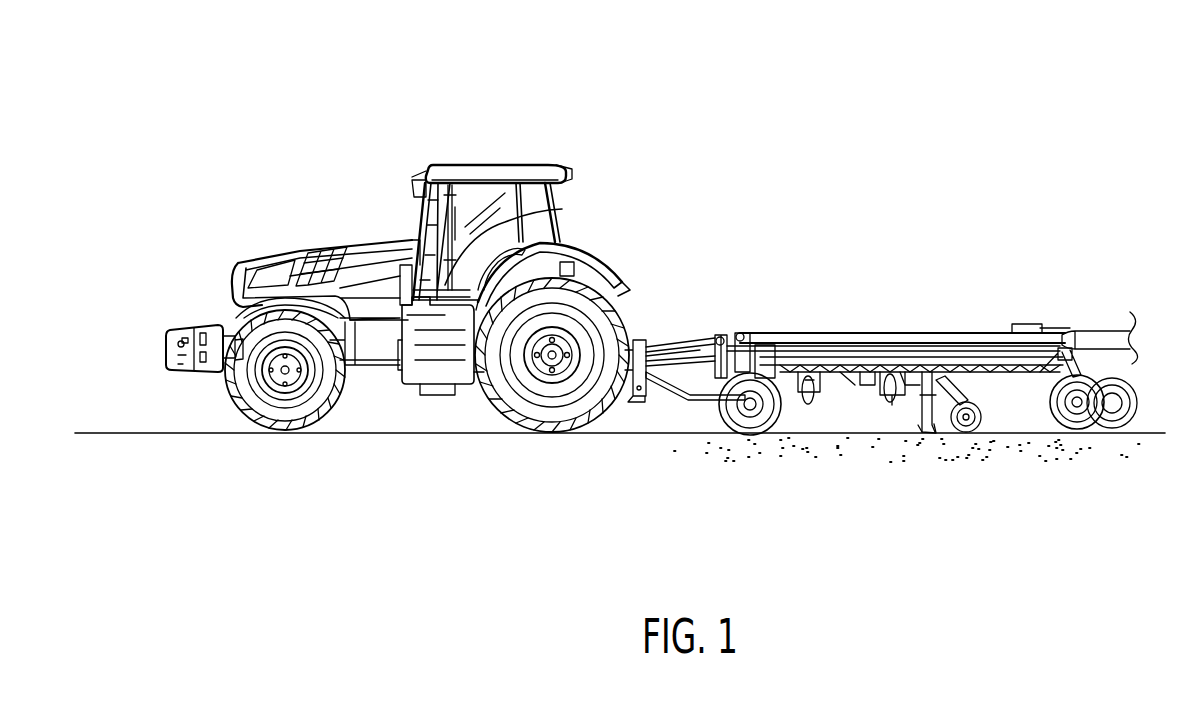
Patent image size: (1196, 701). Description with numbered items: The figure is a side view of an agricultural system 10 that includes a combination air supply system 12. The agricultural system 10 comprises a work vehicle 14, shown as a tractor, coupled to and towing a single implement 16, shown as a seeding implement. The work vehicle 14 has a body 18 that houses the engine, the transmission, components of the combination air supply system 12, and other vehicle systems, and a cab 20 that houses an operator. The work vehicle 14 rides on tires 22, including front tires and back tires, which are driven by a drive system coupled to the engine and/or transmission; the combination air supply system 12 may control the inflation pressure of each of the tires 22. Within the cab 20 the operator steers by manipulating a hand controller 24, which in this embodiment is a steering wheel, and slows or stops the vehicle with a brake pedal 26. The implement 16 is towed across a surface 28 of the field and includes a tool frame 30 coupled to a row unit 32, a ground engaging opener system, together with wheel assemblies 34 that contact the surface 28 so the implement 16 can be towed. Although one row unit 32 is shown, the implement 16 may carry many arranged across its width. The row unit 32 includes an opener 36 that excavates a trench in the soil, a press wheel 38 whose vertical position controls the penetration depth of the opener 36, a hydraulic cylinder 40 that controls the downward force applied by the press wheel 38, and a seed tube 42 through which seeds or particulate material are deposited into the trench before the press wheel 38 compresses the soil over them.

The agricultural system 10 is at (853, 91).
The combination air supply system 12 is at (677, 295).
The work vehicle 14 is at (488, 146).
The implement 16 is at (889, 294).
The body 18 is at (322, 247).
The cab 20 is at (502, 176).
The tires 22 is at (284, 435).
The hand controller 24 is at (468, 205).
The brake pedal 26 is at (560, 210).
The surface 28 is at (634, 441).
The tool frame 30 is at (915, 345).
The row unit 32 is at (912, 418).
The wheel assemblies 34 is at (767, 434).
The opener 36 is at (930, 434).
The press wheel 38 is at (984, 418).
The hydraulic cylinder 40 is at (880, 396).
The seed tube 42 is at (650, 405).